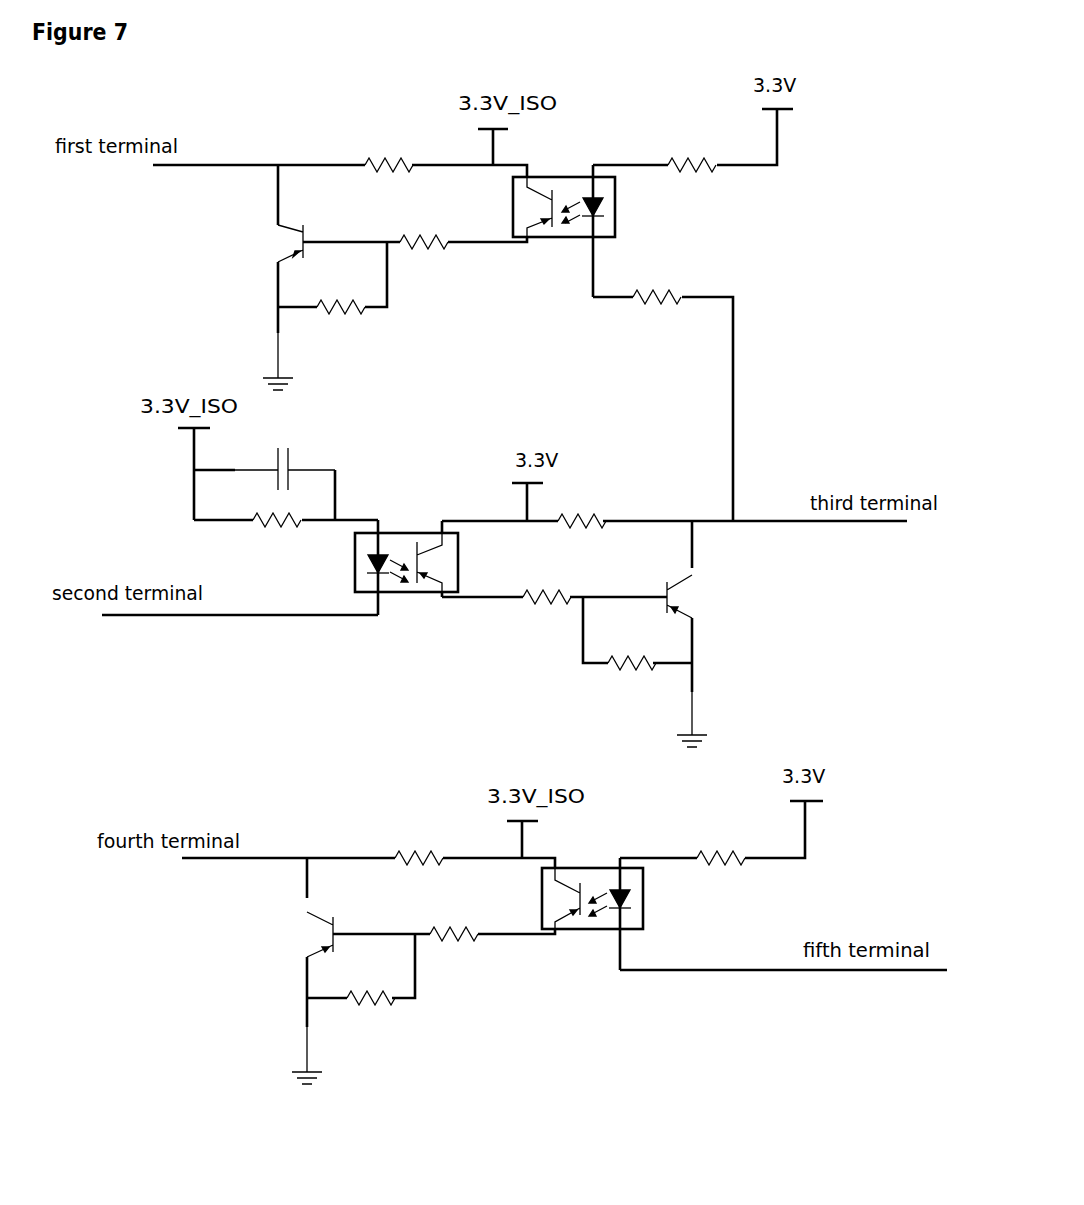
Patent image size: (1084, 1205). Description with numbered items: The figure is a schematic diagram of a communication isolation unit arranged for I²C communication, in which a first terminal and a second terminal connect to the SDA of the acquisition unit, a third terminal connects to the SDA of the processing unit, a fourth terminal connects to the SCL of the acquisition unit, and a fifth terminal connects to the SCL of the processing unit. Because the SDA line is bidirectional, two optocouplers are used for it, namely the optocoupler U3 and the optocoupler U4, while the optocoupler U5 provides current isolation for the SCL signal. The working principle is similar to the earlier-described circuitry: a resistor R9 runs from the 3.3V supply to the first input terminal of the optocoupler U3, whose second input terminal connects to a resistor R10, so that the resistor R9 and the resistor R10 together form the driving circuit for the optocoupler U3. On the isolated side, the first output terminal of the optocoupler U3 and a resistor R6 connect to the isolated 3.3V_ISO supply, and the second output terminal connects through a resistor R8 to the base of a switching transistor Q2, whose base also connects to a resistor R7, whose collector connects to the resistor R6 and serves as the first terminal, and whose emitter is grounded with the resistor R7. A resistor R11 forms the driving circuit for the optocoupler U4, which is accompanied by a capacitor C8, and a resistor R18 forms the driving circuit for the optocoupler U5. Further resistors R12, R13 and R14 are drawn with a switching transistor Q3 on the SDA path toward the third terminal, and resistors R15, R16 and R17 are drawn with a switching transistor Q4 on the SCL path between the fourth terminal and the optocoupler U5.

The resistor R6 is at (389, 179).
The resistor R7 is at (332, 292).
The resistor R8 is at (463, 256).
The resistor R9 is at (692, 179).
The resistor R10 is at (663, 405).
The resistor R11 is at (277, 536).
The resistor R12 is at (582, 536).
The resistor R13 is at (547, 612).
The resistor R14 is at (637, 647).
The resistor R15 is at (419, 872).
The resistor R16 is at (361, 984).
The resistor R17 is at (492, 949).
The resistor R18 is at (721, 872).
The switching transistor Q2 is at (265, 277).
The switching transistor Q3 is at (703, 634).
The switching transistor Q4 is at (295, 971).
The optocoupler U3 is at (564, 213).
The optocoupler U4 is at (406, 552).
The optocoupler U5 is at (592, 902).
The capacitor C8 is at (264, 478).